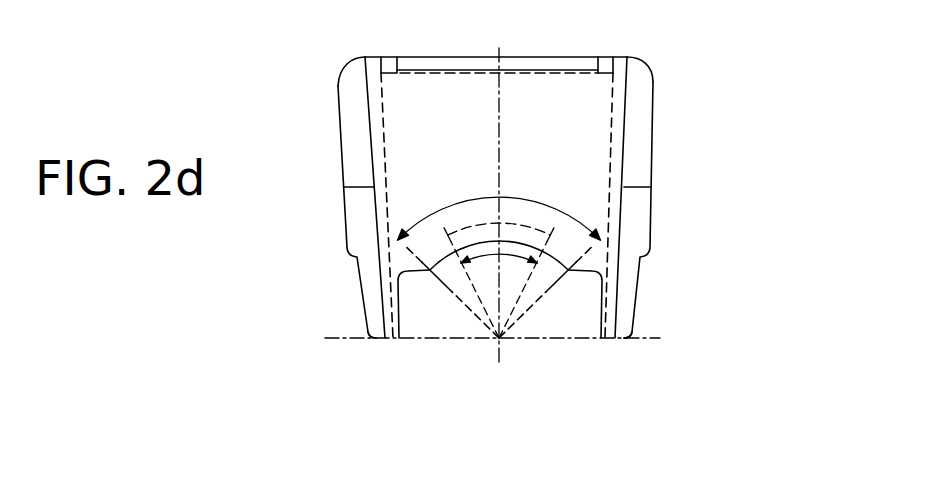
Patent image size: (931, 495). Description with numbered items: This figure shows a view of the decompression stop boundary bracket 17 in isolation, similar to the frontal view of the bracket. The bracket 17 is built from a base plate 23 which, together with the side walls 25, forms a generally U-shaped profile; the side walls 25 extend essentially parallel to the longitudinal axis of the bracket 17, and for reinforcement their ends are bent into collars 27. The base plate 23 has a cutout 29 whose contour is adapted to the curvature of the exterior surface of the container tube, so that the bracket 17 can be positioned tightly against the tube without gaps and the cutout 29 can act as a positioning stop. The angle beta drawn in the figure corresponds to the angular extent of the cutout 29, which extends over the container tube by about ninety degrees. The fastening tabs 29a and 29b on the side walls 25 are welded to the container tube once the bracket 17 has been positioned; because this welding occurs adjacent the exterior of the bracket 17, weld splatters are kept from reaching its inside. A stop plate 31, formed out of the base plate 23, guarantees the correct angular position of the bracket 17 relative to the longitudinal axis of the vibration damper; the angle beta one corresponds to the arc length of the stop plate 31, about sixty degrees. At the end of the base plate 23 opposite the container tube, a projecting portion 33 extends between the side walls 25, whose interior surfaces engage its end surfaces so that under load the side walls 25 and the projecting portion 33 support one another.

The decompression stop boundary bracket 17 is at (550, 210).
The base plate 23 is at (573, 215).
The side walls 25 is at (376, 148).
The collars 27 is at (348, 83).
The cutout 29 is at (552, 305).
The fastening tab 29a is at (390, 340).
The fastening tab 29b is at (610, 336).
The stop plate 31 is at (429, 270).
The projecting portion 33 is at (448, 57).